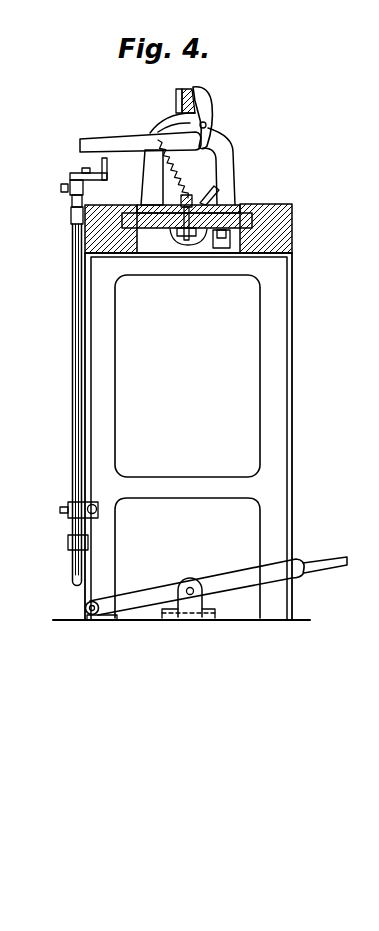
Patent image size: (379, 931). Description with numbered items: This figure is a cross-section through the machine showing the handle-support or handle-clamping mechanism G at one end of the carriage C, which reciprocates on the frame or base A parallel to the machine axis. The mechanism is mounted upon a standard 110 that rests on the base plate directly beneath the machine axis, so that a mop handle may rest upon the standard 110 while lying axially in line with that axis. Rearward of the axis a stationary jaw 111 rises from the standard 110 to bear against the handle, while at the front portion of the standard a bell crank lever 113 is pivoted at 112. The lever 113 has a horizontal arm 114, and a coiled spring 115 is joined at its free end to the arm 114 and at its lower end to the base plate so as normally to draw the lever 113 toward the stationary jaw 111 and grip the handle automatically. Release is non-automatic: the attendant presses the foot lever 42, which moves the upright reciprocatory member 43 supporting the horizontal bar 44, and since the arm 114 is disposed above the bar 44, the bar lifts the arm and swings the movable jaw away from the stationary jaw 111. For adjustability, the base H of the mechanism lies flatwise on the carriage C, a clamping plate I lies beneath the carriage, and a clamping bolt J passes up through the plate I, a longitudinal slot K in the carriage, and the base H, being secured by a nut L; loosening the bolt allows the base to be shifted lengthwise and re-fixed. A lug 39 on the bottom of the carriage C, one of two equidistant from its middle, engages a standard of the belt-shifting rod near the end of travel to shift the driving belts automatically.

The frame or base A is at (181, 416).
The base of handle-supporting mechanism H is at (250, 205).
The clamping bolt J is at (220, 204).
The clamping plate I is at (188, 242).
The longitudinal slot K is at (197, 242).
The carriage C is at (211, 242).
The lug 39 is at (225, 242).
The standard 110 is at (139, 177).
The horizontal arm 114 is at (97, 142).
The stationary jaw 111 is at (176, 103).
The bell crank lever 113 is at (207, 101).
The pivot 112 is at (208, 124).
The handle-clamping mechanism G is at (227, 161).
The coiled spring 115 is at (187, 169).
The nut L is at (222, 190).
The horizontal bar 44 is at (103, 158).
The upright reciprocatory member 43 is at (74, 315).
The foot lever 42 is at (300, 566).